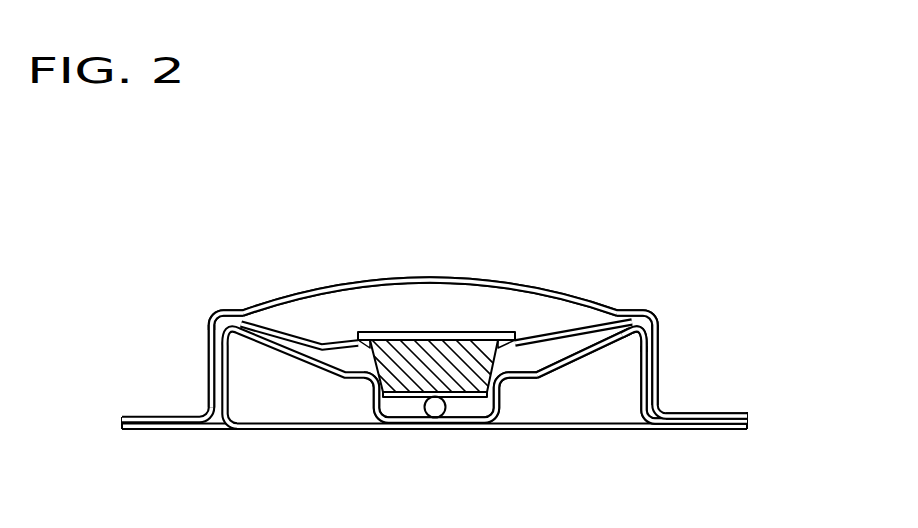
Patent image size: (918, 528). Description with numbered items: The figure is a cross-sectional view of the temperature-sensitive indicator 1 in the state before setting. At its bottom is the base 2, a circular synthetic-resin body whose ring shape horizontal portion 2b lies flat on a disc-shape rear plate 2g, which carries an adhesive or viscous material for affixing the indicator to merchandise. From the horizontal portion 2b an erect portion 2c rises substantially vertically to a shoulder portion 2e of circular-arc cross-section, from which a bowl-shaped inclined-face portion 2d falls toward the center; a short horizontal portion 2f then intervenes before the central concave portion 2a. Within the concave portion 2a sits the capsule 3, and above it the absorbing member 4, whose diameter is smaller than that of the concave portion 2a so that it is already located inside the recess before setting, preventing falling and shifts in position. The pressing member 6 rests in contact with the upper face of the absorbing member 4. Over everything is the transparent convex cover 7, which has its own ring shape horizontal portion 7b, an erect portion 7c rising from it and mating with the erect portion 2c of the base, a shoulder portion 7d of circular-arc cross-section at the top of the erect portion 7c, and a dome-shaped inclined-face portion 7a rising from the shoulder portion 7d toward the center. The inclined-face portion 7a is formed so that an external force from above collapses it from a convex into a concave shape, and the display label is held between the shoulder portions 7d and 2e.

The temperature-sensitive indicator 1 is at (836, 372).
The base 2 is at (560, 385).
The concave portion 2a is at (370, 410).
The horizontal portion 2b is at (725, 422).
The erect portion 2c is at (630, 408).
The inclined-face portion 2d is at (580, 355).
The shoulder portion 2e is at (630, 322).
The horizontal portion 2f is at (523, 378).
The rear plate 2g is at (253, 429).
The capsule 3 is at (433, 410).
The absorbing member 4 is at (403, 397).
The pressing member 6 is at (427, 357).
The cover 7 is at (397, 268).
The inclined-face portion 7a is at (443, 278).
The horizontal portion 7b is at (693, 415).
The erect portion 7c is at (207, 343).
The shoulder portion 7d is at (232, 311).